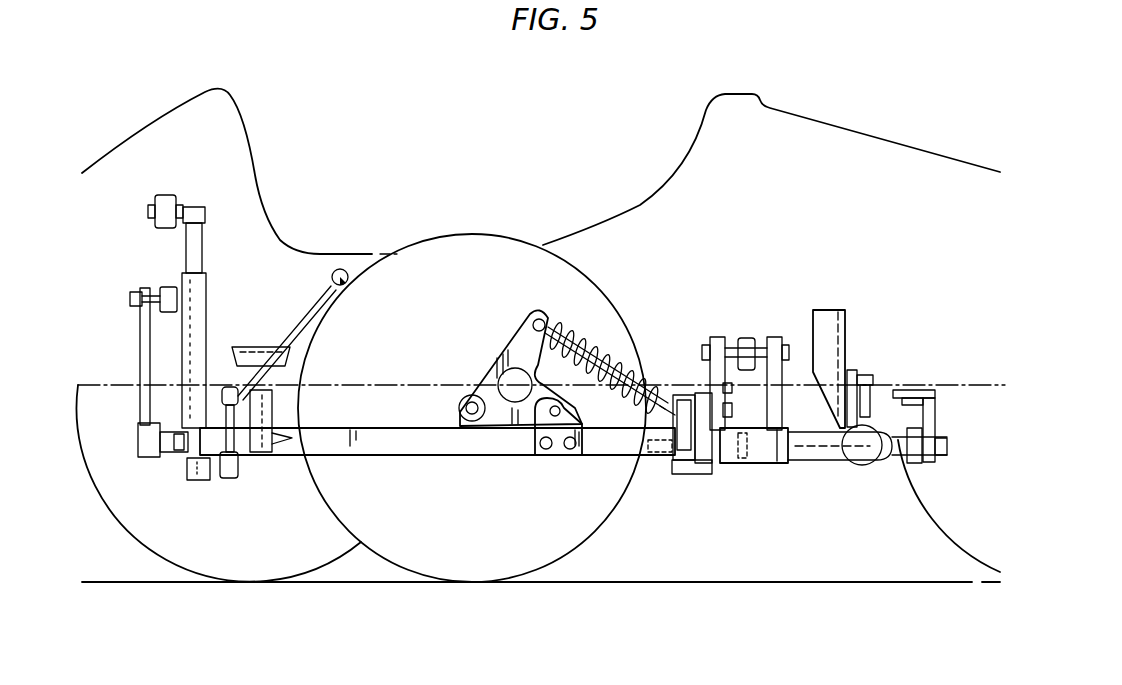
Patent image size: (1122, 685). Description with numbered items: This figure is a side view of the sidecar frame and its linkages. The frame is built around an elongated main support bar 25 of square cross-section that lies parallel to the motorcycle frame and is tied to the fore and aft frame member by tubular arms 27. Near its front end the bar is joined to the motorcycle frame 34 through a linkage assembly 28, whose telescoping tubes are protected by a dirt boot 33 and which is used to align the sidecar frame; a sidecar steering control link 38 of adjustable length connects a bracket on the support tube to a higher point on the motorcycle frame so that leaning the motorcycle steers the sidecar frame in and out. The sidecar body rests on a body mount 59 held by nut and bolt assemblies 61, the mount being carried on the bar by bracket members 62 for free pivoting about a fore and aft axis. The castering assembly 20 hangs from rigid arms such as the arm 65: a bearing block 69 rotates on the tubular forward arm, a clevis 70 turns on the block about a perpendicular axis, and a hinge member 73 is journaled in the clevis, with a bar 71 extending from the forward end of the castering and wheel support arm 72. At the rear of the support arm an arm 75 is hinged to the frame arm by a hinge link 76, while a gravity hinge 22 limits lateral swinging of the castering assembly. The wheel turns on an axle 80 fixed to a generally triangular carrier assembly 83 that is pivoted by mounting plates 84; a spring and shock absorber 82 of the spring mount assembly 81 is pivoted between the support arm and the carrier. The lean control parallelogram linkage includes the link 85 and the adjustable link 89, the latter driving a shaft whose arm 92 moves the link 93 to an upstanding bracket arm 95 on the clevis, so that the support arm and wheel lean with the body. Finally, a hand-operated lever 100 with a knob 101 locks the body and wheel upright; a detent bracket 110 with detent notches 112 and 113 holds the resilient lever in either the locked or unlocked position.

The castering assembly 20 is at (401, 452).
The gravity hinge 22 is at (229, 485).
The main support bar 25 is at (884, 455).
The tubular arms 27 is at (823, 447).
The linkage assembly 28 is at (884, 380).
The dirt boot 33 is at (866, 464).
The motorcycle frame 34 is at (830, 312).
The sidecar steering control link 38 is at (865, 370).
The body mount 59 is at (936, 398).
The nut and bolt assemblies 61 is at (915, 405).
The bracket members 62 is at (920, 464).
The rigid arm 65 is at (203, 481).
The bearing block 69 is at (765, 462).
The clevis 70 is at (700, 476).
The bar 71 is at (662, 424).
The castering and wheel support arm 72 is at (458, 455).
The hinge member 73 is at (668, 462).
The arm 75 is at (265, 453).
The hinge link 76 is at (236, 470).
The axle 80 is at (463, 398).
The spring mount assembly 81 is at (609, 357).
The spring and shock absorber 82 is at (632, 358).
The carrier assembly 83 is at (508, 350).
The mounting plates 84 is at (563, 456).
The link 85 is at (162, 197).
The link 89 is at (165, 285).
The arm 92 is at (776, 338).
The link 93 is at (748, 338).
The upstanding bracket arm 95 is at (718, 338).
The hand-operated lever 100 is at (327, 291).
The knob 101 is at (340, 268).
The detent bracket 110 is at (290, 357).
The detent notch 112 is at (240, 346).
The detent notch 113 is at (272, 346).